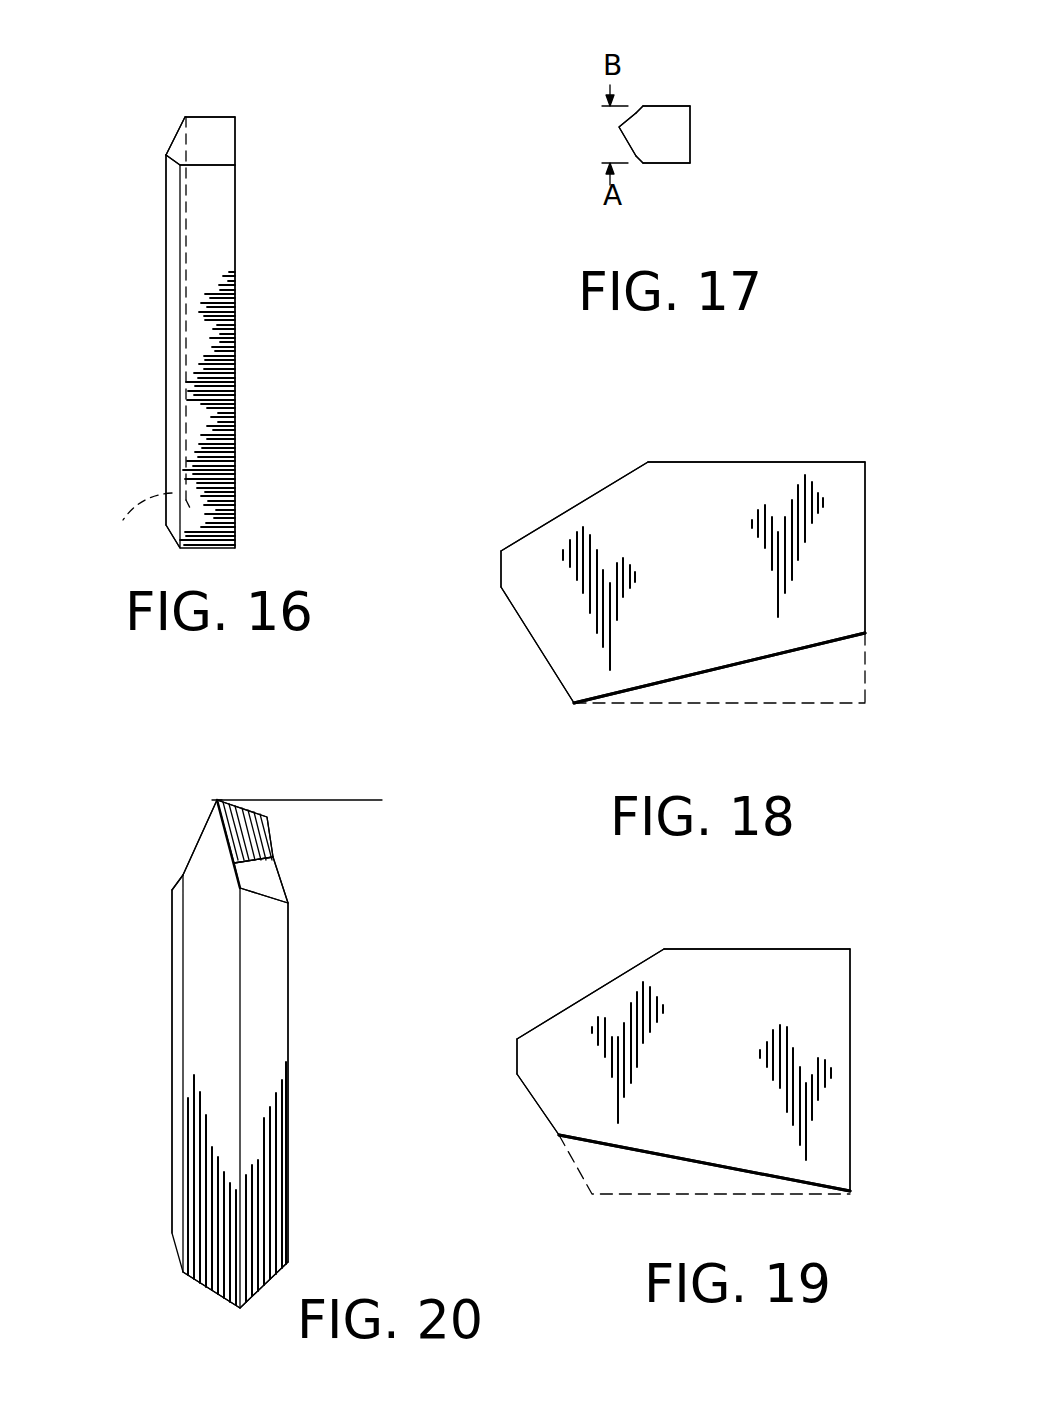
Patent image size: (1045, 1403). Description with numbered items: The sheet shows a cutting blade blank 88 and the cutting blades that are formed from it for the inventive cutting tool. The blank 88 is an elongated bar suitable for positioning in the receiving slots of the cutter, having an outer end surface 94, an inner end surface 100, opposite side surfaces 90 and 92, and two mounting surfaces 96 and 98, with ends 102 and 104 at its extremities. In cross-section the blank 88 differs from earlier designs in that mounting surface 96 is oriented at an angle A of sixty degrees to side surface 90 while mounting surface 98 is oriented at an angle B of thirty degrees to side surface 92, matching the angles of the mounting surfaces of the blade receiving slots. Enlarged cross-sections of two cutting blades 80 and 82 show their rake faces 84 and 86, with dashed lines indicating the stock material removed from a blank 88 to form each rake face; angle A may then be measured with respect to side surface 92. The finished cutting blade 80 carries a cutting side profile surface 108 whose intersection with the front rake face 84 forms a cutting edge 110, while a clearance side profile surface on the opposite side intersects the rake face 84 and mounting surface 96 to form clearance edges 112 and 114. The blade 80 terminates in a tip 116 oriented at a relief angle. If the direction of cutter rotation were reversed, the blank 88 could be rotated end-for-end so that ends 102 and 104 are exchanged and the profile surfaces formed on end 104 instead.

In FIG. 19, the cutting blade 80 is at (733, 1076).
In FIG. 20, the cutting blade 80 is at (320, 1095).
In FIG. 18, the cutting blade 82 is at (721, 592).
In FIG. 19, the front rake face 84 is at (690, 1163).
In FIG. 20, the front rake face 84 is at (212, 1265).
In FIG. 18, the rake face 86 is at (675, 690).
In FIG. 16, the cutting blade blank 88 is at (255, 328).
In FIG. 17, the cutting blade blank 88 is at (677, 143).
In FIG. 16, the side surface 90 is at (210, 220).
In FIG. 17, the side surface 90 is at (680, 163).
In FIG. 18, the side surface 90 is at (755, 703).
In FIG. 19, the side surface 90 is at (770, 1194).
In FIG. 16, the side surface 92 is at (205, 117).
In FIG. 17, the side surface 92 is at (683, 106).
In FIG. 18, the side surface 92 is at (760, 462).
In FIG. 19, the side surface 92 is at (775, 949).
In FIG. 16, the outer end surface 94 is at (237, 147).
In FIG. 17, the outer end surface 94 is at (690, 127).
In FIG. 18, the outer end surface 94 is at (865, 572).
In FIG. 19, the outer end surface 94 is at (850, 1060).
In FIG. 20, the outer end surface 94 is at (272, 983).
In FIG. 16, the mounting surface 96 is at (170, 248).
In FIG. 17, the mounting surface 96 is at (643, 163).
In FIG. 18, the mounting surface 96 is at (517, 620).
In FIG. 19, the mounting surface 96 is at (535, 1100).
In FIG. 20, the mounting surface 96 is at (172, 1090).
In FIG. 16, the mounting surface 98 is at (178, 128).
In FIG. 17, the mounting surface 98 is at (643, 106).
In FIG. 18, the mounting surface 98 is at (560, 520).
In FIG. 19, the mounting surface 98 is at (573, 1003).
In FIG. 16, the inner end surface 100 is at (166, 155).
In FIG. 17, the inner end surface 100 is at (619, 127).
In FIG. 18, the inner end surface 100 is at (501, 569).
In FIG. 19, the inner end surface 100 is at (517, 1056).
In FIG. 16, the end 102 is at (210, 142).
In FIG. 16, the end 104 is at (141, 523).
In FIG. 20, the cutting side profile surface 108 is at (272, 878).
In FIG. 20, the cutting edge 110 is at (250, 863).
In FIG. 20, the clearance edge 112 is at (197, 840).
In FIG. 20, the clearance edge 114 is at (178, 882).
In FIG. 20, the tip 116 is at (217, 800).